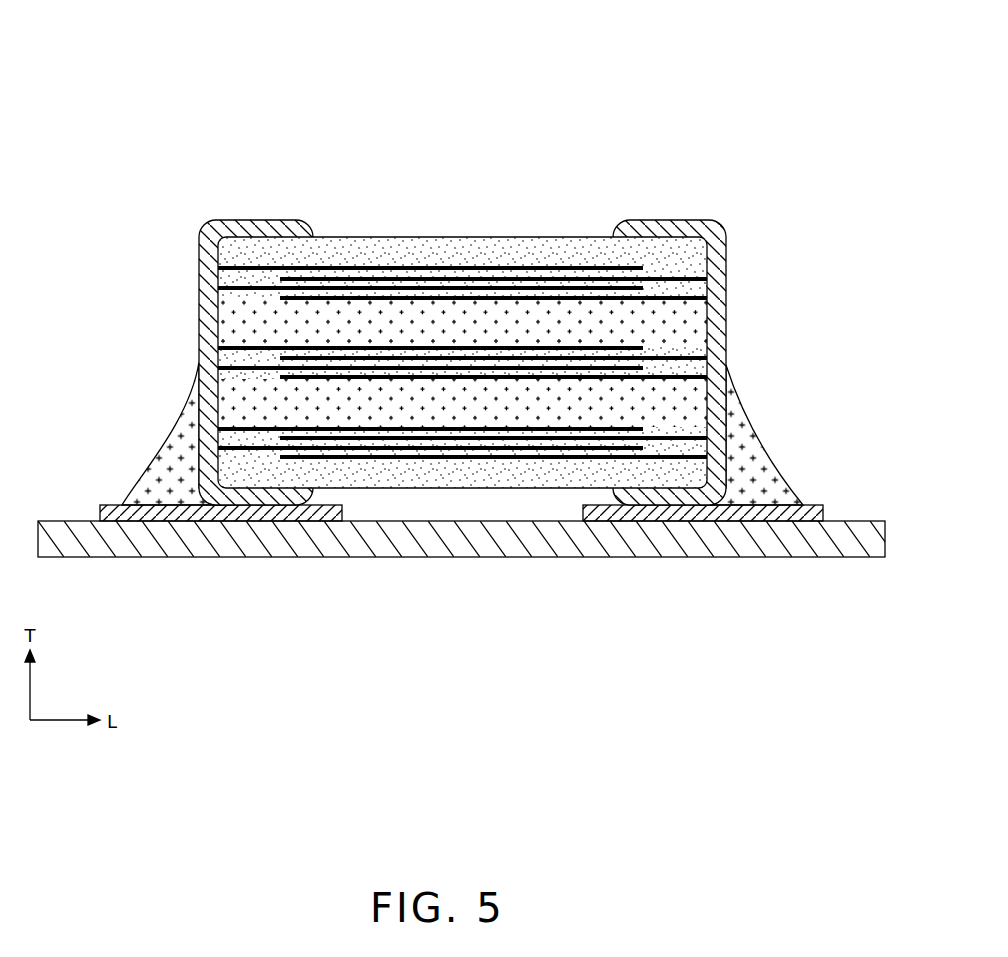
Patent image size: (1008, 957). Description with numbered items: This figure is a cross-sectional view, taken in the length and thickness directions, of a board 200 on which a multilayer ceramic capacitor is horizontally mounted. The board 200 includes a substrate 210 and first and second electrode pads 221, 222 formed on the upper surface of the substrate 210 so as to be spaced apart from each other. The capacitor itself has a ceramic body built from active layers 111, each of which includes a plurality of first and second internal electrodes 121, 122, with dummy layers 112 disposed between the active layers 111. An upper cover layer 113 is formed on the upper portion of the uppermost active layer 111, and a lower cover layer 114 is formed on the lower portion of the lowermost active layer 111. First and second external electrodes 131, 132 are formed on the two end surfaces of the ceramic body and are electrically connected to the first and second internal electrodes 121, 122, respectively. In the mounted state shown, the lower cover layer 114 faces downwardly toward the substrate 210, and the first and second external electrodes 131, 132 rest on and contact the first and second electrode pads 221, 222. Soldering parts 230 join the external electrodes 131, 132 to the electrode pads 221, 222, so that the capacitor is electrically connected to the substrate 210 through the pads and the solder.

The board 200 is at (232, 41).
The active layers 111 is at (233, 278).
The dummy layers 112 is at (697, 320).
The upper cover layer 113 is at (378, 250).
The lower cover layer 114 is at (480, 478).
The first internal electrodes 121 is at (320, 267).
The second internal electrodes 122 is at (445, 280).
The first external electrode 131 is at (248, 221).
The second external electrode 132 is at (682, 220).
The substrate 210 is at (812, 547).
The first electrode pad 221 is at (115, 517).
The second electrode pad 222 is at (812, 510).
The soldering parts 230 is at (160, 480).